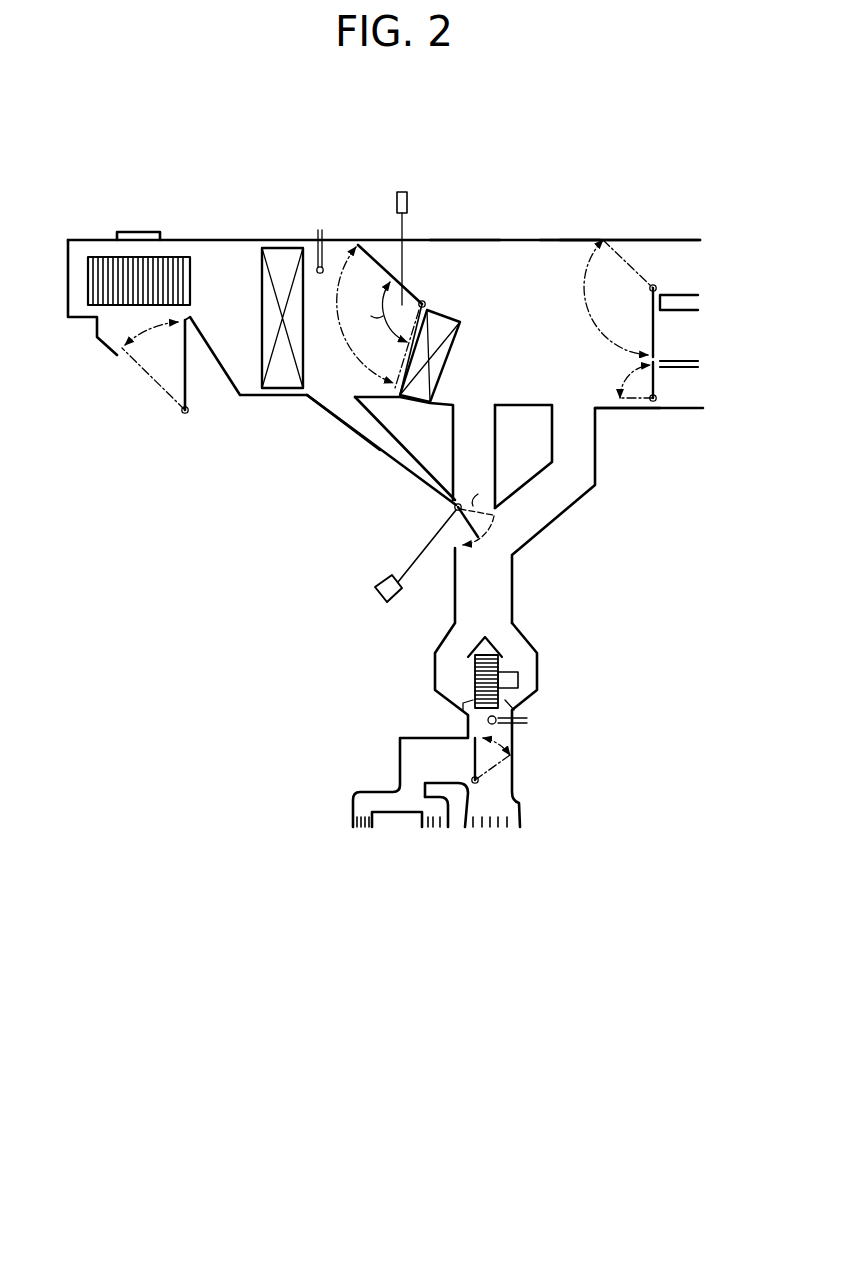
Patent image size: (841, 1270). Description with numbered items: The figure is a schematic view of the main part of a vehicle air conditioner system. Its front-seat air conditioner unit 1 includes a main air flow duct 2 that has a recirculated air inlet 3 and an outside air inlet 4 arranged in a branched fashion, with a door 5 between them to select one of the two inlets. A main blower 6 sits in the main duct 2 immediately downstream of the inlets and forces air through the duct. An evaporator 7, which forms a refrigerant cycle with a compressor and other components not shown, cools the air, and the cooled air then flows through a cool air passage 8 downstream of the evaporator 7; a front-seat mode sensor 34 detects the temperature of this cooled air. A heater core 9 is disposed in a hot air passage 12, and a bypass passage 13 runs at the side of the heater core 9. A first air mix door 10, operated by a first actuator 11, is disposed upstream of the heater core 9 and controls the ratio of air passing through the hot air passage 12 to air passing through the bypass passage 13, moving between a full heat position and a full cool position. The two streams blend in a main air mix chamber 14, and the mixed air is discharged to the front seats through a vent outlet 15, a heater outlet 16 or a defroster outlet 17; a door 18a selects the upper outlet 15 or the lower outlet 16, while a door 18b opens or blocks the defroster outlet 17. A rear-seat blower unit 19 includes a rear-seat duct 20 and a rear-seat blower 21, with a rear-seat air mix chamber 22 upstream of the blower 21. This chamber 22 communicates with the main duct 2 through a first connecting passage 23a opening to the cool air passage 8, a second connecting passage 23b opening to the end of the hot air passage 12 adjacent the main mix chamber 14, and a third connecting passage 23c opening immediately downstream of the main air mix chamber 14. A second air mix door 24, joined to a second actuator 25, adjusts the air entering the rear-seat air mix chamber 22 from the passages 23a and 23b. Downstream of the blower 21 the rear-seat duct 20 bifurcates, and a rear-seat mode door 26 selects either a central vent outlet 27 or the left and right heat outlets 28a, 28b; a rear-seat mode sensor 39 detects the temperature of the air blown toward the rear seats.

The front-seat air conditioner unit 1 is at (600, 238).
The main air flow duct 2 is at (517, 238).
The recirculated air inlet 3 is at (135, 370).
The outside air inlet 4 is at (190, 355).
The door 5 is at (192, 400).
The main blower 6 is at (172, 258).
The evaporator 7 is at (276, 250).
The cool air passage 8 is at (312, 360).
The heater core 9 is at (421, 399).
The first air mix door 10 is at (378, 257).
The first actuator 11 is at (401, 190).
The hot air passage 12 is at (457, 368).
The bypass passage 13 is at (445, 278).
The main air mix chamber 14 is at (563, 257).
The vent outlet 15 is at (675, 263).
The heater outlet 16 is at (675, 325).
The defroster outlet 17 is at (677, 392).
The door 18a is at (656, 346).
The door 18b is at (670, 403).
The rear-seat blower unit 19 is at (432, 675).
The rear-seat duct 20 is at (538, 668).
The rear-seat blower 21 is at (480, 675).
The rear-seat air mix chamber 22 is at (497, 527).
The first connecting passage 23a is at (365, 435).
The second connecting passage 23b is at (475, 457).
The third connecting passage 23c is at (560, 485).
The second air mix door 24 is at (467, 520).
The second actuator 25 is at (378, 580).
The rear-seat mode door 26 is at (467, 750).
The central vent outlet 27 is at (500, 827).
The left heat outlet 28a is at (363, 827).
The right heat outlet 28b is at (433, 827).
The front-seat mode sensor 34 is at (323, 265).
The rear-seat mode sensor 39 is at (497, 724).